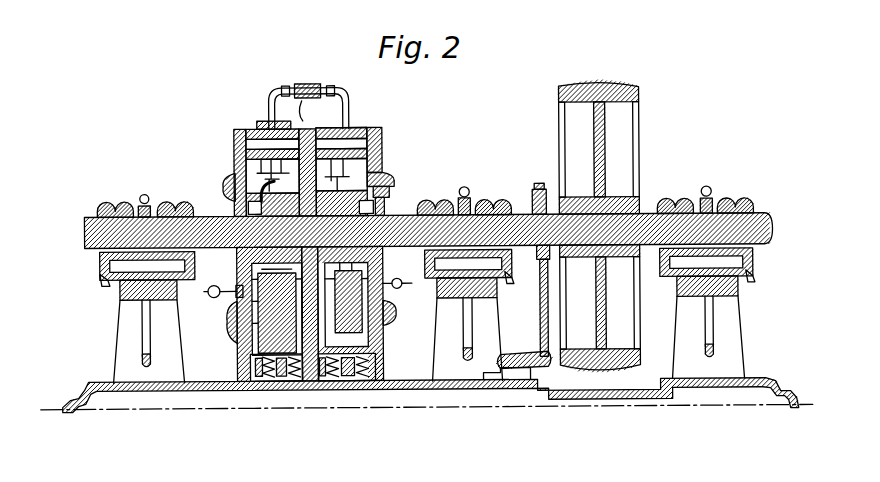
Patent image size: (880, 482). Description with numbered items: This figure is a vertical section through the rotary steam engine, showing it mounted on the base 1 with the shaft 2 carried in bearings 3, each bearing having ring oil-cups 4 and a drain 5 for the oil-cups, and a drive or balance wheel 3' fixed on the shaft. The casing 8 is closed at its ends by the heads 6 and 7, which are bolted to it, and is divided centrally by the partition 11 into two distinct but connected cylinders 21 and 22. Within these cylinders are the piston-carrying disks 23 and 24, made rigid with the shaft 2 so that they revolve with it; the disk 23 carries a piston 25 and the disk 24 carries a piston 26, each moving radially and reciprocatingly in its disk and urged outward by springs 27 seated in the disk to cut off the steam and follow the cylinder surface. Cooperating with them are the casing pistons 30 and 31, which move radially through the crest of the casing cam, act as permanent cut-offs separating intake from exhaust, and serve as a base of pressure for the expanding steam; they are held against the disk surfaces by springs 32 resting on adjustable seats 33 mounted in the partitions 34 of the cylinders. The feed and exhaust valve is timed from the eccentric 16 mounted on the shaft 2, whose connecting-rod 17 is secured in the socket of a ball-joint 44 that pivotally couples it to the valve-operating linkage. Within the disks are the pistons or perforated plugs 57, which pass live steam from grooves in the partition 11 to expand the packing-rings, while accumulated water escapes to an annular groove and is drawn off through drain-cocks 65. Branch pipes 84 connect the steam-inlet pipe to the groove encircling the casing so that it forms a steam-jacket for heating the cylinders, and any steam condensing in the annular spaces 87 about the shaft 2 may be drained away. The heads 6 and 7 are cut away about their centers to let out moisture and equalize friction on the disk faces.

The base 1 is at (600, 405).
The shaft 2 is at (84, 231).
The bearings 3 is at (419, 195).
The drive or balance wheel 3' is at (614, 225).
The ring oil-cups 4 is at (104, 266).
The drain 5 is at (104, 284).
The head 6 is at (236, 151).
The head 7 is at (384, 151).
The casing 8 is at (361, 130).
The partition 11 is at (322, 378).
The eccentric 16 is at (538, 192).
The connecting-rod 17 is at (539, 316).
The cylinder 21 is at (385, 136).
The cylinder 22 is at (262, 140).
The piston-carrying wheel or disk 23 is at (372, 208).
The piston-carrying wheel or disk 24 is at (250, 198).
The piston 25 is at (394, 178).
The piston 26 is at (240, 296).
The springs 27 is at (386, 192).
The piston 30 is at (384, 328).
The piston 31 is at (238, 330).
The springs 32 is at (255, 382).
The adjustable seats 33 is at (270, 380).
The partitions 34 is at (282, 380).
The ball-joint 44 is at (546, 358).
The pistons or perforated plugs 57 is at (236, 176).
The drain-cocks 65 is at (404, 274).
The branch pipes 84 is at (271, 96).
The annular spaces 87 is at (248, 207).